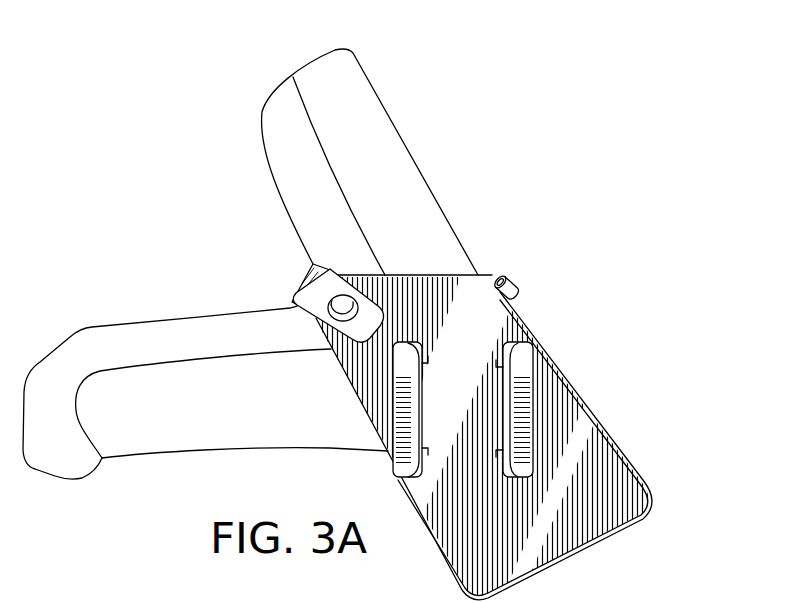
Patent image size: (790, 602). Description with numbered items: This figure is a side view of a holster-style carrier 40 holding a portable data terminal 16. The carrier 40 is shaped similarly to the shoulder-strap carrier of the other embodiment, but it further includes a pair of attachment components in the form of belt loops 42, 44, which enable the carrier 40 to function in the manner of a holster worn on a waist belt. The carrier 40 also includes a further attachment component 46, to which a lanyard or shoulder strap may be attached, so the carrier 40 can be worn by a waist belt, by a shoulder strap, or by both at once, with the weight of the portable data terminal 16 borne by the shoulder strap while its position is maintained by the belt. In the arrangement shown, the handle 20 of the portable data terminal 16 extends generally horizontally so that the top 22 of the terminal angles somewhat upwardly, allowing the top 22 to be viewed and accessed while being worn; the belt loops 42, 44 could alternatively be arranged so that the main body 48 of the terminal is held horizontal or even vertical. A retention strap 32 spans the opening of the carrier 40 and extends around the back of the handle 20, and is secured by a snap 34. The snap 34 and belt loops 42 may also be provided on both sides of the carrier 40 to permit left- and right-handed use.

The portable data terminal 16 is at (322, 162).
The handle 20 is at (162, 338).
The top surface 22 is at (383, 97).
The retention strap 32 is at (328, 282).
The snap 34 is at (345, 303).
The carrier 40 is at (496, 412).
The belt loop 42 is at (522, 352).
The belt loop 44 is at (395, 477).
The attachment component 46 is at (517, 283).
The main body 48 is at (388, 175).